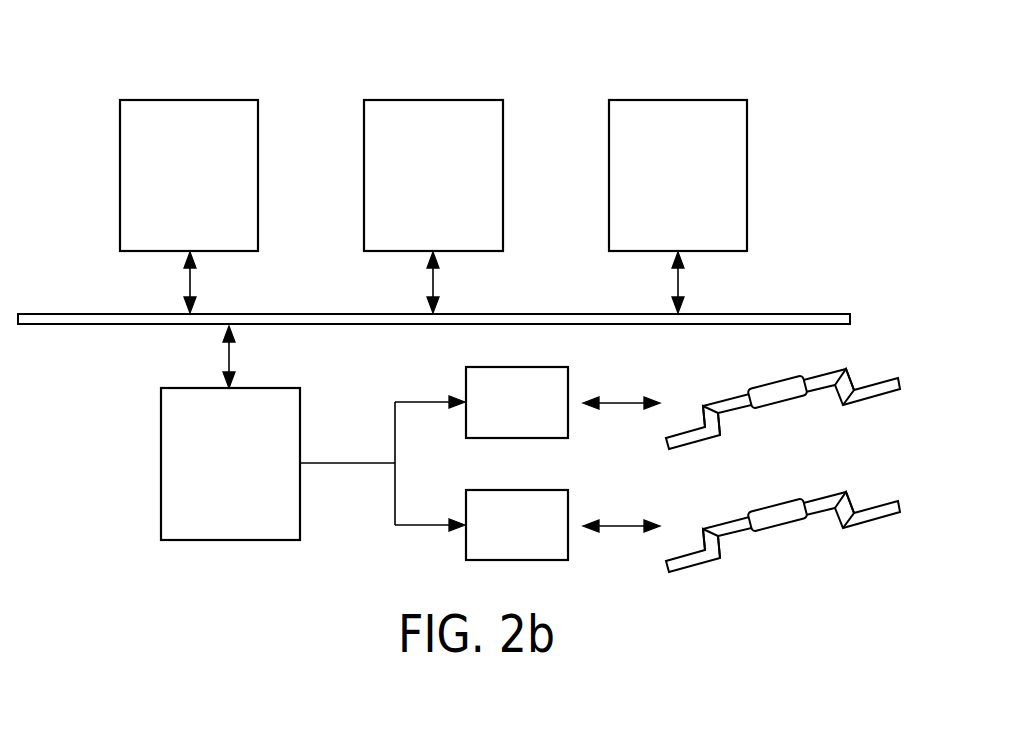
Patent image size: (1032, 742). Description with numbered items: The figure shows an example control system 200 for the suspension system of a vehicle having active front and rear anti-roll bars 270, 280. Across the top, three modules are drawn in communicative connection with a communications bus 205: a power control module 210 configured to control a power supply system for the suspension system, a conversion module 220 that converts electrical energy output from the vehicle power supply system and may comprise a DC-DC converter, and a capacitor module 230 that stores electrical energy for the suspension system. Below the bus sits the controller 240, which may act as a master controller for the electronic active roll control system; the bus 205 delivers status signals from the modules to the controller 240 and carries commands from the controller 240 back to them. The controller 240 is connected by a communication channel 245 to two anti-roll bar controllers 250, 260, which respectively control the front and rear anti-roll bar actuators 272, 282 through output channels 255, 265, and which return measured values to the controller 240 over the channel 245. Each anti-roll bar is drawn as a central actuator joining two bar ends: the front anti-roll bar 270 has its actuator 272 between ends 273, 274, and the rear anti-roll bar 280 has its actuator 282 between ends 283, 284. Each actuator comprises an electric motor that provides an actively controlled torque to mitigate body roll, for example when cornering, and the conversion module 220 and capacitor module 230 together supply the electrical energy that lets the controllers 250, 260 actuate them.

The control system 200 is at (148, 68).
The communications bus 205 is at (80, 313).
The power control module 210 is at (210, 187).
The conversion module 220 is at (455, 187).
The capacitor module 230 is at (699, 187).
The controller 240 is at (251, 475).
The communication channel 245 is at (356, 461).
The anti-roll bar controller 250 is at (537, 413).
The anti-roll bar controller 260 is at (537, 536).
The output channel 255 is at (623, 400).
The output channel 265 is at (624, 523).
The front anti-roll bar 270 is at (800, 401).
The front anti-roll bar actuator 272 is at (803, 400).
The anti-roll bar end 273 is at (826, 373).
The anti-roll bar end 274 is at (733, 394).
The rear anti-roll bar 280 is at (800, 524).
The rear anti-roll bar actuator 282 is at (784, 524).
The anti-roll bar end 283 is at (817, 496).
The anti-roll bar end 284 is at (733, 517).